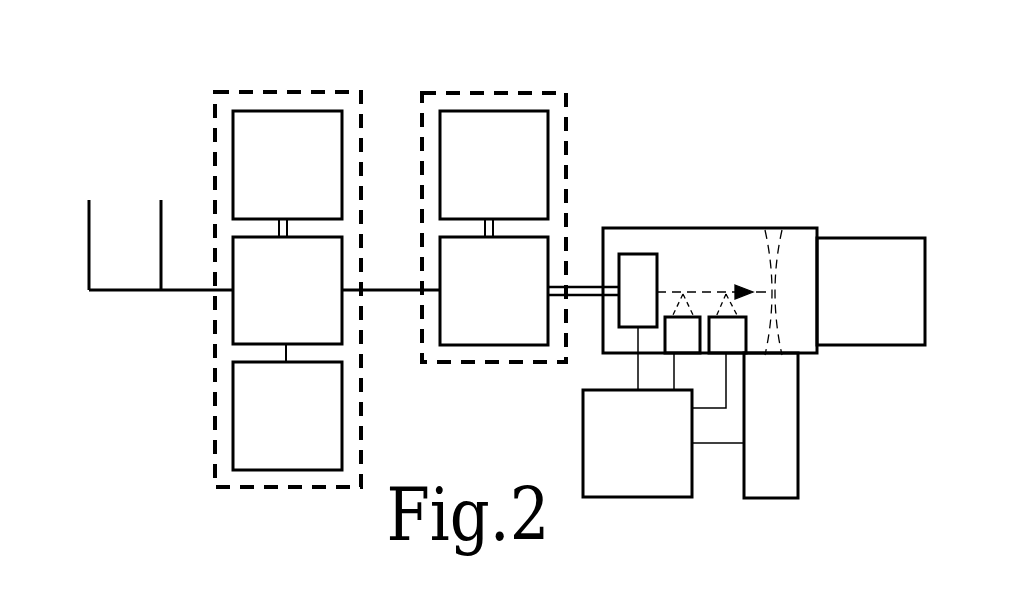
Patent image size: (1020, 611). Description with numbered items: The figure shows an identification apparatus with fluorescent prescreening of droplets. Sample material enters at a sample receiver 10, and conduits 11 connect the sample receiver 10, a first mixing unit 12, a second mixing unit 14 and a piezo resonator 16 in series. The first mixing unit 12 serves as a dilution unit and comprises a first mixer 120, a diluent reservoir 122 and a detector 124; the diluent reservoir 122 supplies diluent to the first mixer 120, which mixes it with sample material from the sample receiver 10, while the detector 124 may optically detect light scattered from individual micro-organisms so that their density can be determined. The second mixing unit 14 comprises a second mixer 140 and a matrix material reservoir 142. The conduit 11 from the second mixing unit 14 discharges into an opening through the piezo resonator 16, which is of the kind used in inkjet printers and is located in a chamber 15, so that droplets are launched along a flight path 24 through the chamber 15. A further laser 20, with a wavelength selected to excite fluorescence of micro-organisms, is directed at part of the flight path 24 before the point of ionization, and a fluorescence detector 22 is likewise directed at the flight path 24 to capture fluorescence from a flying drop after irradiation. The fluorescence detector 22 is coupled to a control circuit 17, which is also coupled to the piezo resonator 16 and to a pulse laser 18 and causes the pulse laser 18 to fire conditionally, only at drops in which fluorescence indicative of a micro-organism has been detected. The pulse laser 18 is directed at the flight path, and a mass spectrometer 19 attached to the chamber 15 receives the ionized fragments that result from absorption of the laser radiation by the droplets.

The sample receiver 10 is at (89, 218).
The conduits 11 is at (187, 290).
The first mixing unit 12 is at (215, 101).
The first mixer 120 is at (233, 318).
The diluent reservoir 122 is at (287, 111).
The detector 124 is at (232, 453).
The second mixing unit 14 is at (448, 364).
The second mixer 140 is at (498, 347).
The matrix material reservoir 142 is at (498, 111).
The chamber 15 is at (725, 228).
The piezo resonator 16 is at (634, 254).
The control circuit 17 is at (636, 497).
The pulse laser 18 is at (780, 498).
The mass spectrometer 19 is at (870, 238).
The further laser 20 is at (684, 345).
The fluorescence detector 22 is at (722, 340).
The flight path 24 is at (710, 290).